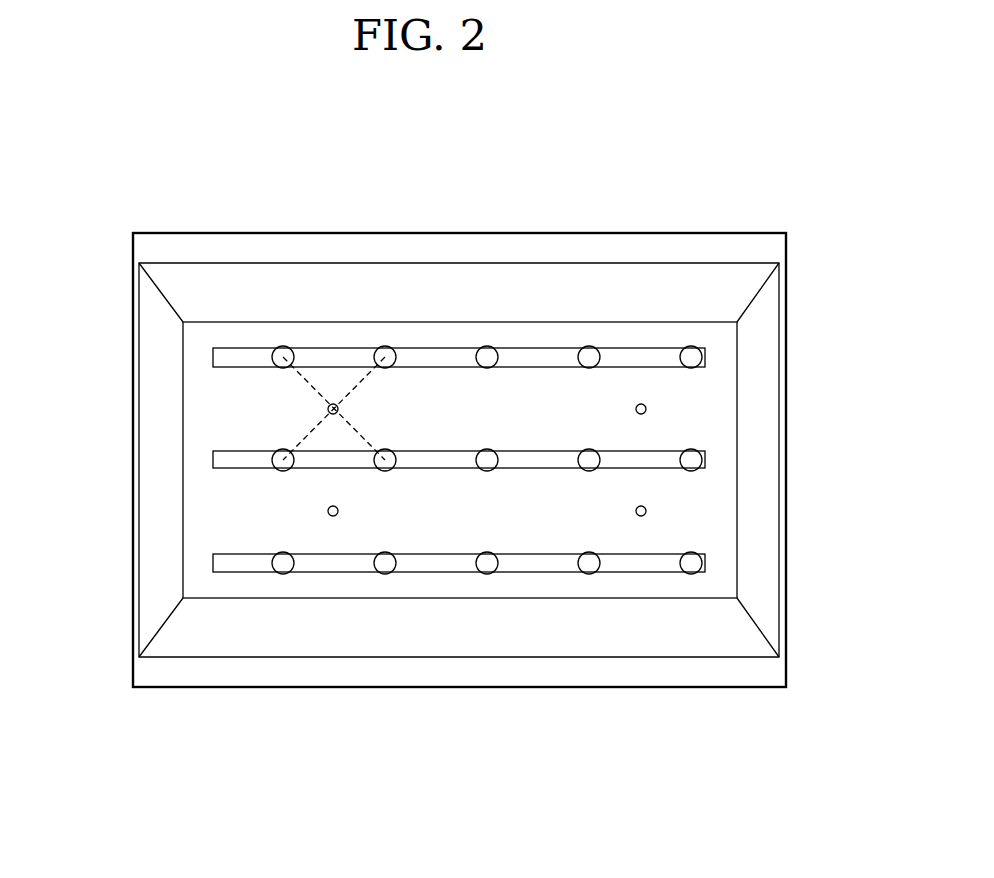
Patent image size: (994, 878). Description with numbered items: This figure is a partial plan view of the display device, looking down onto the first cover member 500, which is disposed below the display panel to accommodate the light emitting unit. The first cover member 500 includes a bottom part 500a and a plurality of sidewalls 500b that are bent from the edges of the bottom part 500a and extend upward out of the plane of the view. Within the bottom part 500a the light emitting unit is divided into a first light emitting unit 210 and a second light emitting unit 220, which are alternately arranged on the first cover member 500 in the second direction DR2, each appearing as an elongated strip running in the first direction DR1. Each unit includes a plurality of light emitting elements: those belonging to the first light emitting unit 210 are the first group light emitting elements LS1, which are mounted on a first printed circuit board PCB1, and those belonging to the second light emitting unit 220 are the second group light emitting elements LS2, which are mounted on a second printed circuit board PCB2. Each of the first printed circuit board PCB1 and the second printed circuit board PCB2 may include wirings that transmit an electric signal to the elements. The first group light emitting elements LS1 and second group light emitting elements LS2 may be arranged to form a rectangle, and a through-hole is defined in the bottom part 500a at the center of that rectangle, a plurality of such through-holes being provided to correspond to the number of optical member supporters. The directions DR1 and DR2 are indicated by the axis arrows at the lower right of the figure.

The first cover member 500 is at (733, 181).
The bottom part 500a is at (542, 389).
The sidewalls 500b is at (460, 287).
The first printed circuit board PCB1 is at (213, 352).
The second printed circuit board PCB2 is at (213, 455).
The first group light emitting elements LS1 is at (282, 368).
The second group light emitting elements LS2 is at (282, 471).
The first light emitting unit 210 is at (707, 357).
The second light emitting unit 220 is at (707, 460).
The first direction DR1 is at (677, 849).
The second direction DR2 is at (677, 849).